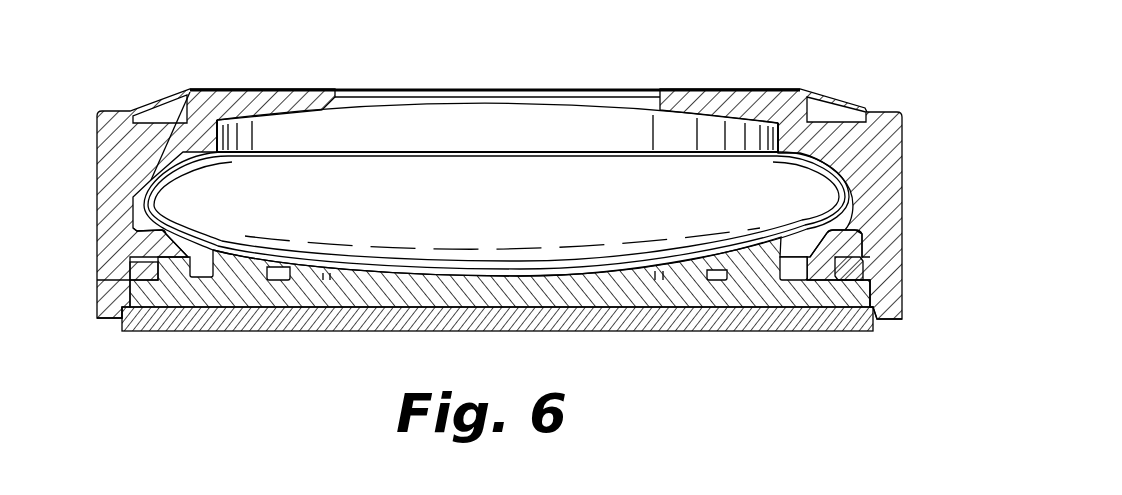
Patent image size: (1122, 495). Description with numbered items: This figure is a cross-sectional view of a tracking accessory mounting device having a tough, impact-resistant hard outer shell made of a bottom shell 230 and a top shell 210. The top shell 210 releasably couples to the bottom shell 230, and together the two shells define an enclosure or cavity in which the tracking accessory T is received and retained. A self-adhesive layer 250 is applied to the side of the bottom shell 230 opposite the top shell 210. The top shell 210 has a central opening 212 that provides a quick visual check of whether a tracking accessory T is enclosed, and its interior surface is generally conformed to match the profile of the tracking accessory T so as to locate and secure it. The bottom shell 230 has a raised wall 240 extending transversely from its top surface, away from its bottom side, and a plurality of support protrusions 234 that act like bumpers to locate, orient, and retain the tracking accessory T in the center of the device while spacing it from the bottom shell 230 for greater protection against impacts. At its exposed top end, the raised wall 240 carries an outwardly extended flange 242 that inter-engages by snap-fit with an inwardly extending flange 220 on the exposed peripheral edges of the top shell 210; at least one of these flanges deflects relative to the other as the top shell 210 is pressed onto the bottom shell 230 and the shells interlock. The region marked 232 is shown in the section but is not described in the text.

The top shell 210 is at (905, 118).
The central opening 212 is at (649, 90).
The inwardly extending flange 220 is at (857, 268).
The bottom shell 230 is at (91, 313).
The lower housing portion 232 is at (867, 292).
The support protrusions 234 is at (244, 273).
The raised wall 240 is at (151, 263).
The outwardly extended flange 242 is at (860, 233).
The self-adhesive layer 250 is at (800, 332).
The tracking accessory T is at (498, 212).